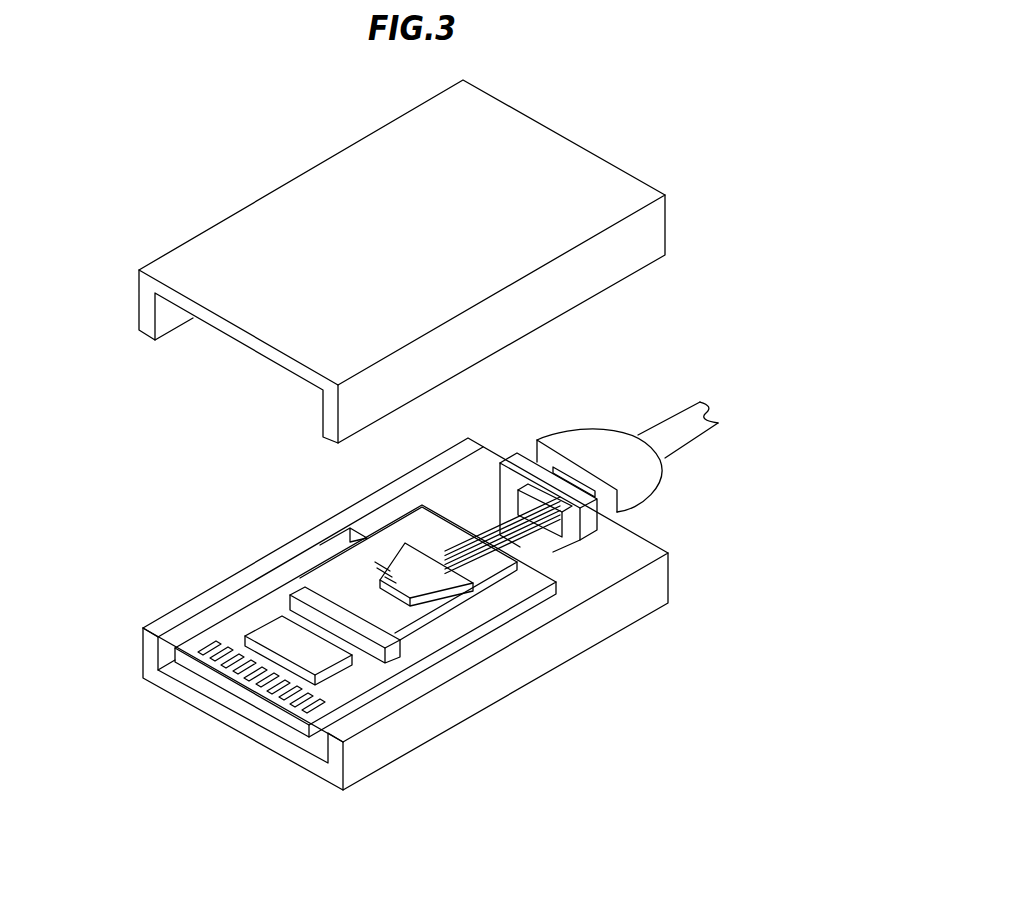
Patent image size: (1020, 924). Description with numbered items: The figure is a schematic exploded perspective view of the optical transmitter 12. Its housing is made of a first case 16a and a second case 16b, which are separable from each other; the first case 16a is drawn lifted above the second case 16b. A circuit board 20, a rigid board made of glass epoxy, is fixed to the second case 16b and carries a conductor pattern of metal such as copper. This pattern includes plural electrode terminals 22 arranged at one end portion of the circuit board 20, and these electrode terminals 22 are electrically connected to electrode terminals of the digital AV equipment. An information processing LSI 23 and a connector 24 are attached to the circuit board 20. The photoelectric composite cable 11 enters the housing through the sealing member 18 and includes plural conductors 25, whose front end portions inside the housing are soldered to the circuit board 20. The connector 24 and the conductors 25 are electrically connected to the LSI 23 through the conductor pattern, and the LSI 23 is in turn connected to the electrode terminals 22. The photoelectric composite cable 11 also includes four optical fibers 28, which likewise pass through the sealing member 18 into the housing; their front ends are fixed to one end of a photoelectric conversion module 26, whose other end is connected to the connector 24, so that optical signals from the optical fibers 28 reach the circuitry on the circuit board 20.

The first case 16a is at (347, 147).
The second case 16b is at (530, 682).
The photoelectric composite cable 11 is at (668, 419).
The optical transmitter 12 is at (466, 800).
The sealing member 18 is at (587, 432).
The circuit board 20 is at (202, 597).
The electrode terminals 22 is at (232, 684).
The information processing LSI 23 is at (237, 632).
The connector 24 is at (310, 593).
The conductors 25 is at (548, 540).
The photoelectric conversion module 26 is at (358, 582).
The optical fibers 28 is at (475, 550).